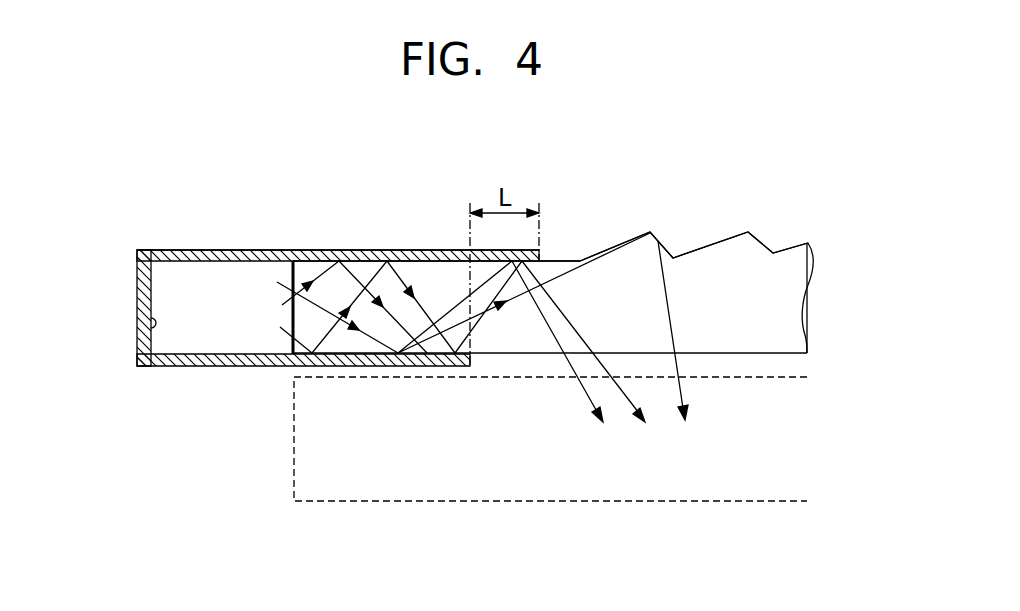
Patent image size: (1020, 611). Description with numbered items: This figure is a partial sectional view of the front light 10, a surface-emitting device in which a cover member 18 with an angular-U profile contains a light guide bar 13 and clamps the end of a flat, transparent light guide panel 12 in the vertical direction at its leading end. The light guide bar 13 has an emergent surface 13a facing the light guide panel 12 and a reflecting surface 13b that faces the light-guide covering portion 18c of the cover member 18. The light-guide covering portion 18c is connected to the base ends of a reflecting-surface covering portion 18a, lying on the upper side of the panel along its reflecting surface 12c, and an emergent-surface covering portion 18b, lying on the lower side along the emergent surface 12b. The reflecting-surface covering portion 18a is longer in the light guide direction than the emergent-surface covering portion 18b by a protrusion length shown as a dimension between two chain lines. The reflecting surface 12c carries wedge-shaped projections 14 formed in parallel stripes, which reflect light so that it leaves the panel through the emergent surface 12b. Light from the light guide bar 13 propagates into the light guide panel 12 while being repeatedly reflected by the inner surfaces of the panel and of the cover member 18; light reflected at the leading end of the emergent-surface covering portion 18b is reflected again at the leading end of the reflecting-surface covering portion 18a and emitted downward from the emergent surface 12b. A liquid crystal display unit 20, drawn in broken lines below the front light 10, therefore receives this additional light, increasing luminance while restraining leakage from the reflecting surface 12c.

The front light 10 is at (792, 232).
The light guide panel 12 is at (585, 294).
The emergent surface 12b is at (755, 354).
The reflecting surface 12c is at (583, 261).
The light guide bar 13 is at (202, 332).
The emergent surface of the light guide bar 13a is at (294, 262).
The reflecting surface of the light guide bar 13b is at (151, 324).
The projections 14 is at (630, 241).
The cover member 18 is at (290, 286).
The reflecting-surface covering portion 18a is at (387, 250).
The emergent-surface covering portion 18b is at (245, 366).
The light-guide covering portion 18c is at (138, 288).
The liquid crystal display unit 20 is at (550, 477).